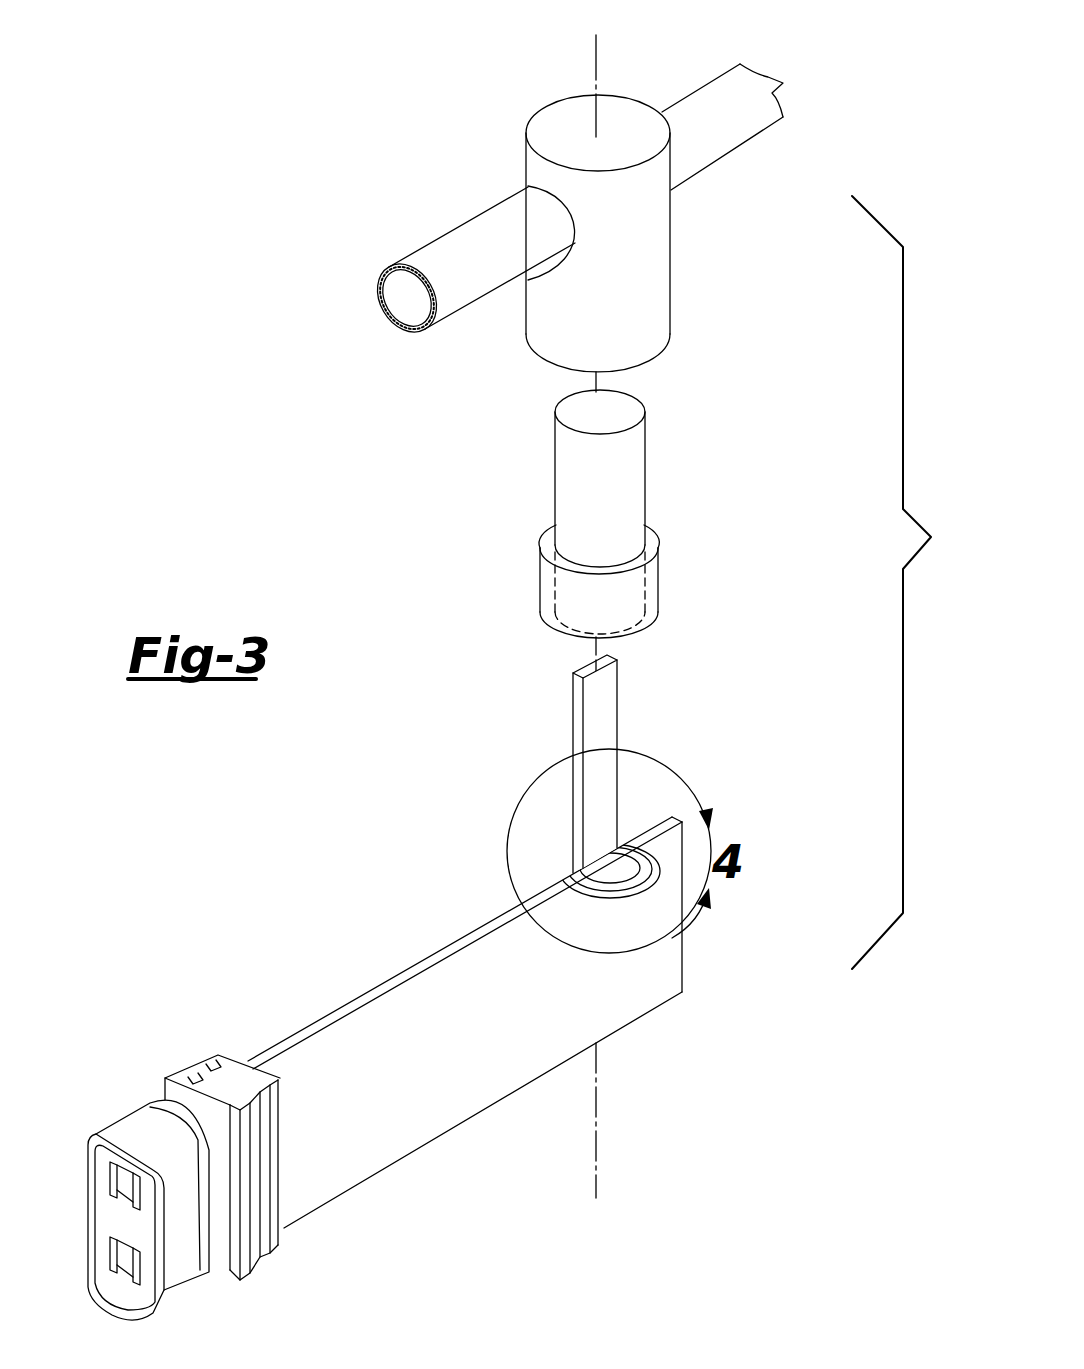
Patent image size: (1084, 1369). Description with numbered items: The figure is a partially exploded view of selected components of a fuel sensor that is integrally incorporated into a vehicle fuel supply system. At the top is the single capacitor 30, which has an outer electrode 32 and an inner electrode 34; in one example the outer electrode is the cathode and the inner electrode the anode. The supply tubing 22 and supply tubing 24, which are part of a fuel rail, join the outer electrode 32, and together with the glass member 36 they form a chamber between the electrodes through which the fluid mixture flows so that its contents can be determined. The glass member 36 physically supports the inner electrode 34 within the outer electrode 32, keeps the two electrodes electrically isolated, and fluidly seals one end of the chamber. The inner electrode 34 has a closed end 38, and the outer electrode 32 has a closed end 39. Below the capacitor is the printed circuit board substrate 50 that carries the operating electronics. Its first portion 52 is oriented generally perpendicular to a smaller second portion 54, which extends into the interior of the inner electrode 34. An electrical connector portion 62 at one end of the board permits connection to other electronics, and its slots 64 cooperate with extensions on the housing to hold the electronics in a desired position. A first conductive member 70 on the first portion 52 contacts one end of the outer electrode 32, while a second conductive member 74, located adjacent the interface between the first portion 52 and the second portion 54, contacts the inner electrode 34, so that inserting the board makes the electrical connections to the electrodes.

The supply tubing 22 is at (477, 240).
The supply tubing 24 is at (710, 107).
The capacitor 30 is at (695, 410).
The outer electrode 32 is at (645, 240).
The inner electrode 34 is at (633, 487).
The glass member 36 is at (653, 578).
The closed end 38 is at (577, 413).
The closed end 39 is at (562, 123).
The printed circuit board substrate 50 is at (440, 1106).
The first portion 52 is at (452, 983).
The second portion 54 is at (610, 698).
The electrical connector portion 62 is at (190, 1292).
The slots 64 is at (210, 1068).
The first conductive member 70 is at (653, 875).
The second conductive member 74 is at (610, 868).